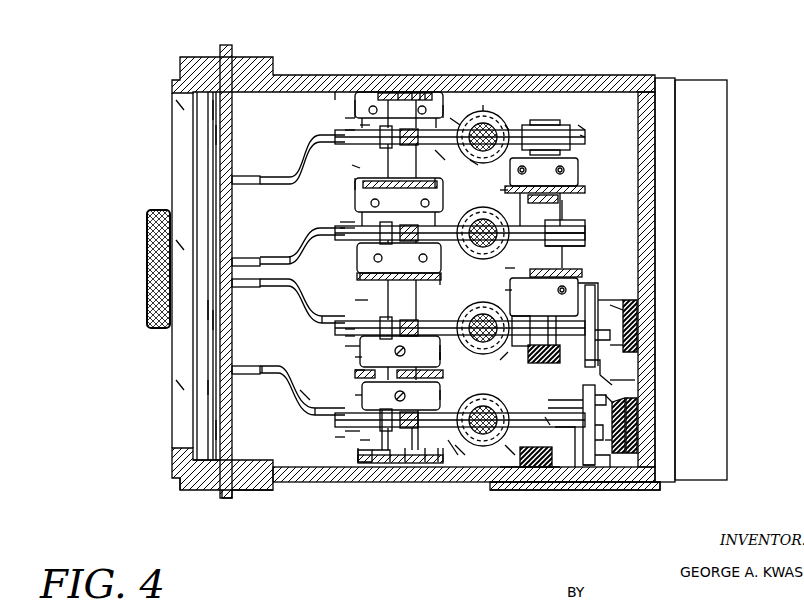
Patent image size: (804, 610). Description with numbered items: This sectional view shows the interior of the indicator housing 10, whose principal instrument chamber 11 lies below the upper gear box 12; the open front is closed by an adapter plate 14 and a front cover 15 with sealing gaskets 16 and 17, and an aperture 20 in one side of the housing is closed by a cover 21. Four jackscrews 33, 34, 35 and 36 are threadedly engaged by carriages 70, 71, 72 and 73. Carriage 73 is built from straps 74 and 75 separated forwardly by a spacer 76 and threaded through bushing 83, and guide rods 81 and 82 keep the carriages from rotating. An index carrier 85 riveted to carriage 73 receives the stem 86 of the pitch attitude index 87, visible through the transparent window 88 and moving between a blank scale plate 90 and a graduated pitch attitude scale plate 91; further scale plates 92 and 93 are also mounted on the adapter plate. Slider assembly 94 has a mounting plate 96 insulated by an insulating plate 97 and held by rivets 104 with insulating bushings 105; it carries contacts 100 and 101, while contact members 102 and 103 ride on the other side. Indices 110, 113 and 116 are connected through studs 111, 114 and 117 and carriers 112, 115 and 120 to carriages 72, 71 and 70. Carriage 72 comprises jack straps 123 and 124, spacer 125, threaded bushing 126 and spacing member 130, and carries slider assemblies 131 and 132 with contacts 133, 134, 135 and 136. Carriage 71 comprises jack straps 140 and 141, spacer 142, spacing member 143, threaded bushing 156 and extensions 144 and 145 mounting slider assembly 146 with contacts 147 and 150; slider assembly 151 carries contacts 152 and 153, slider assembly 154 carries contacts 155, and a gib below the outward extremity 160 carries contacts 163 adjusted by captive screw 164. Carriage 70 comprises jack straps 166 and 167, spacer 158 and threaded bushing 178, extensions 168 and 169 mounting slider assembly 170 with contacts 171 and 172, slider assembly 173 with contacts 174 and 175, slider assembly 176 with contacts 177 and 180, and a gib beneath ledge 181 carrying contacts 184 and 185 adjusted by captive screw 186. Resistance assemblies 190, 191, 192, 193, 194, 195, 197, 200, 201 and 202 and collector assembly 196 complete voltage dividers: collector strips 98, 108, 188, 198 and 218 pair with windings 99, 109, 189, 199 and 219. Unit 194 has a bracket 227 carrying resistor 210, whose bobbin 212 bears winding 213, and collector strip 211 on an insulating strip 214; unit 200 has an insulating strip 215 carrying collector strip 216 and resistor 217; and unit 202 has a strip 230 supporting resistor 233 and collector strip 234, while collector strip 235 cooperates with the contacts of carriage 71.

The housing 10 is at (565, 75).
The principal instrument chamber 11 is at (334, 92).
The upper gear box 12 is at (716, 262).
The adapter plate 14 is at (226, 498).
The front cover 15 is at (178, 490).
The sealing gasket 16 is at (235, 490).
The sealing gasket 17 is at (220, 490).
The aperture 20 is at (636, 490).
The cover 21 is at (523, 490).
The jackscrew 33 is at (483, 420).
The jackscrew 34 is at (483, 328).
The jackscrew 35 is at (483, 233).
The jackscrew 36 is at (483, 137).
The carriage 70 is at (452, 455).
The carriage 71 is at (345, 346).
The carriage 72 is at (585, 230).
The carriage 73 is at (492, 105).
The strap 74 is at (345, 120).
The strap 75 is at (345, 143).
The spacer 76 is at (360, 145).
The guide rod 81 is at (438, 320).
The guide rod 82 is at (430, 240).
The bushing 83 is at (505, 125).
The index carrier 85 is at (295, 175).
The stem 86 is at (233, 112).
The pitch attitude index 87 is at (225, 135).
The transparent window 88 is at (200, 160).
The blank scale plate 90 is at (225, 110).
The graduated pitch attitude scale plate 91 is at (205, 218).
The scale plate 92 is at (210, 320).
The scale plate 93 is at (222, 428).
The slider assembly 94 is at (455, 118).
The mounting plate 96 is at (358, 115).
The insulating plate 97 is at (360, 130).
The collector strip 98 is at (365, 222).
The resistance winding 99 is at (438, 185).
The contact 100 is at (398, 94).
The contact 101 is at (414, 92).
The contact member 102 is at (360, 178).
The contact member 103 is at (399, 178).
The rivet 104 is at (345, 132).
The insulating bushing 105 is at (445, 110).
The collector strip 108 is at (398, 93).
The resistance winding 109 is at (420, 92).
The index 110 is at (160, 212).
The stud 111 is at (226, 236).
The carrier 112 is at (265, 258).
The index 113 is at (205, 310).
The stud 114 is at (236, 289).
The carrier 115 is at (272, 290).
The index 116 is at (232, 385).
The stud 117 is at (240, 378).
The carrier 120 is at (283, 388).
The jack strap 123 is at (340, 220).
The jack strap 124 is at (345, 232).
The spacer 125 is at (360, 275).
The threaded bushing 126 is at (500, 190).
The spacing member 130 is at (340, 228).
The slider assembly 131 is at (578, 220).
The slider assembly 132 is at (585, 244).
The contacts 133 is at (580, 200).
The contacts 134 is at (570, 218).
The contacts 135 is at (568, 255).
The contacts 136 is at (510, 268).
The jack strap 140 is at (345, 300).
The jack strap 141 is at (345, 336).
The spacer 142 is at (360, 302).
The spacing member 143 is at (345, 329).
The rearward extension 144 is at (598, 305).
The rearward extension 145 is at (612, 385).
The slider assembly 146 is at (592, 340).
The contacts 147 is at (592, 368).
The contacts 150 is at (640, 302).
The slider assembly 151 is at (500, 360).
The contacts 152 is at (550, 336).
The contacts 153 is at (520, 336).
The slider assembly 154 is at (395, 305).
The contacts 155 is at (440, 300).
The threaded bushing 156 is at (445, 280).
The spacer 158 is at (345, 431).
The outward extremity 160 is at (355, 358).
The contacts 163 is at (425, 351).
The captive screw 164 is at (400, 357).
The jack strap 166 is at (262, 375).
The jack strap 167 is at (335, 416).
The extension 168 is at (582, 414).
The extension 169 is at (600, 488).
The slider assembly 170 is at (603, 455).
The contacts 171 is at (600, 403).
The contacts 172 is at (598, 425).
The slider assembly 173 is at (462, 442).
The contacts 174 is at (580, 482).
The contacts 175 is at (510, 448).
The slider assembly 176 is at (335, 437).
The contacts 177 is at (440, 428).
The threaded bushing 178 is at (545, 365).
The contacts 180 is at (445, 410).
The ledge 181 is at (330, 400).
The contacts 184 is at (401, 416).
The contacts 185 is at (426, 392).
The captive screw 186 is at (360, 400).
The collector strip 188 is at (588, 180).
The resistance winding 189 is at (544, 172).
The resistance assembly 190 is at (425, 92).
The resistance assembly 191 is at (440, 222).
The resistance assembly 192 is at (585, 170).
The resistance assembly 193 is at (590, 280).
The resistance assembly 194 is at (395, 482).
The resistance assembly 195 is at (440, 158).
The collector assembly 196 is at (345, 263).
The resistance assembly 197 is at (640, 335).
The collector strip 198 is at (544, 297).
The resistance winding 199 is at (505, 290).
The resistance assembly 200 is at (640, 418).
The resistance assembly 201 is at (553, 482).
The resistance assembly 202 is at (355, 370).
The resistor 210 is at (322, 480).
The collector strip 211 is at (435, 470).
The bobbin 212 is at (412, 470).
The winding 213 is at (363, 482).
The insulating strip 214 is at (442, 462).
The insulating strip 215 is at (630, 400).
The collector strip 216 is at (635, 375).
The resistor 217 is at (630, 428).
The collector strip 218 is at (635, 350).
The winding 219 is at (640, 318).
The bracket 227 is at (358, 455).
The insulating strip 230 is at (445, 377).
The resistor 233 is at (448, 352).
The collector strip 234 is at (355, 374).
The collector strip 235 is at (399, 280).